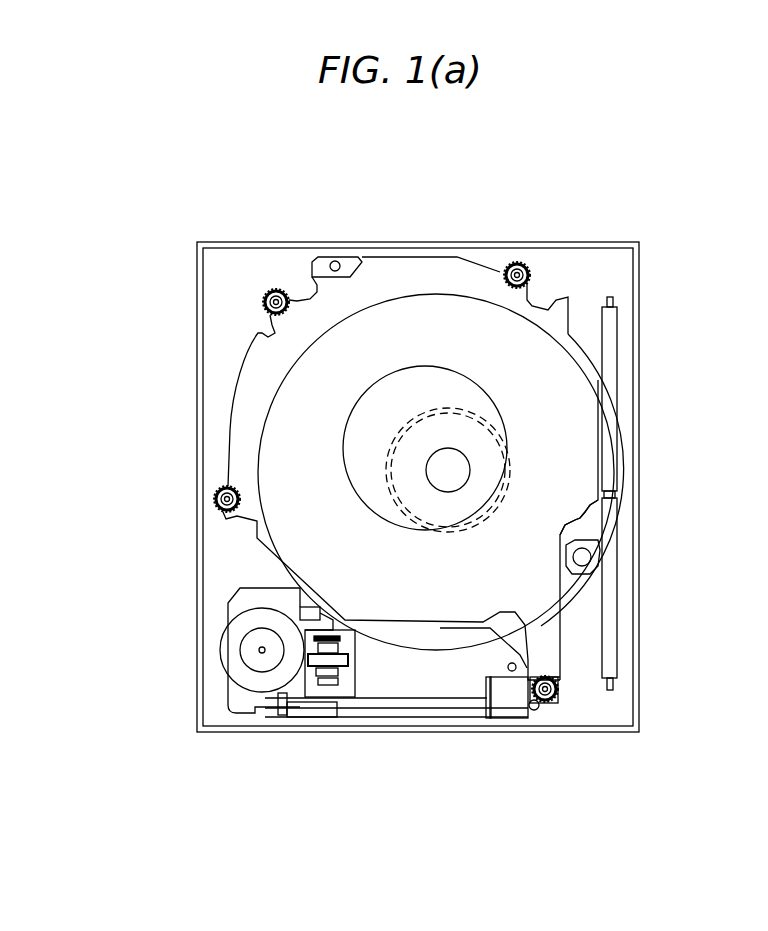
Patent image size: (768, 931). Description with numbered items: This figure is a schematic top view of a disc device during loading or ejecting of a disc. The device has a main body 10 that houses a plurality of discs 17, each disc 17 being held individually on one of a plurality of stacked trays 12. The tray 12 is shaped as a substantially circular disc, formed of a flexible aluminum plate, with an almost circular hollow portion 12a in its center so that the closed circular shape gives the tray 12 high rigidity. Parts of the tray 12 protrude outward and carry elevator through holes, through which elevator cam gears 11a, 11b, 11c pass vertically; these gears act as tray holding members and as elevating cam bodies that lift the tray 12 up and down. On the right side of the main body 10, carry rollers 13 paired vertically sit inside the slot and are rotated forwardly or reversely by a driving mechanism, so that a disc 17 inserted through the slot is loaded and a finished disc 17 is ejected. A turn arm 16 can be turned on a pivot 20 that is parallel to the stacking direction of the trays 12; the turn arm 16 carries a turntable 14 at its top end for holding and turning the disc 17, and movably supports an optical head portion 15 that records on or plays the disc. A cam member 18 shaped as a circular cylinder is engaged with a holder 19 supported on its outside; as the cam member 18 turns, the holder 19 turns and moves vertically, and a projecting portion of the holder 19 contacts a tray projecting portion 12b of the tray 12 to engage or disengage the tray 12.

The main body 10 is at (437, 242).
The elevator cam gear 11a is at (517, 262).
The elevator cam gear 11b is at (276, 290).
The elevator cam gear 11c is at (215, 500).
The tray 12 is at (243, 397).
The hollow portion 12a is at (477, 515).
The tray projecting portion 12b is at (596, 560).
The carry roller 13 is at (620, 313).
The turntable 14 is at (260, 657).
The optical head portion 15 is at (346, 704).
The turn arm 16 is at (262, 594).
The disc 17 is at (600, 357).
The cam member 18 is at (592, 566).
The holder 19 is at (600, 548).
The pivot 20 is at (512, 673).